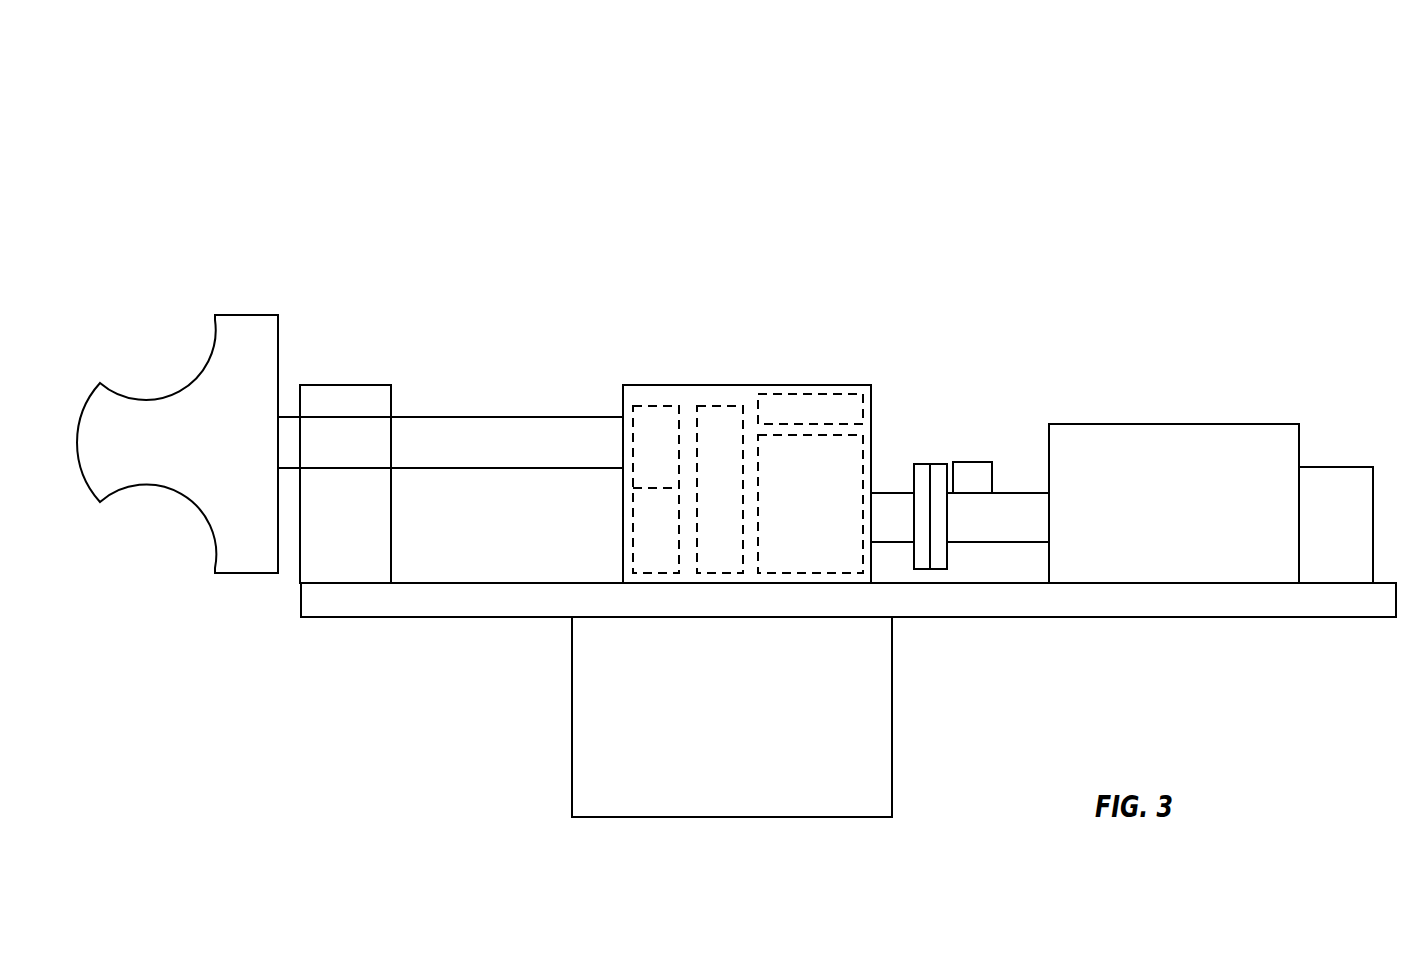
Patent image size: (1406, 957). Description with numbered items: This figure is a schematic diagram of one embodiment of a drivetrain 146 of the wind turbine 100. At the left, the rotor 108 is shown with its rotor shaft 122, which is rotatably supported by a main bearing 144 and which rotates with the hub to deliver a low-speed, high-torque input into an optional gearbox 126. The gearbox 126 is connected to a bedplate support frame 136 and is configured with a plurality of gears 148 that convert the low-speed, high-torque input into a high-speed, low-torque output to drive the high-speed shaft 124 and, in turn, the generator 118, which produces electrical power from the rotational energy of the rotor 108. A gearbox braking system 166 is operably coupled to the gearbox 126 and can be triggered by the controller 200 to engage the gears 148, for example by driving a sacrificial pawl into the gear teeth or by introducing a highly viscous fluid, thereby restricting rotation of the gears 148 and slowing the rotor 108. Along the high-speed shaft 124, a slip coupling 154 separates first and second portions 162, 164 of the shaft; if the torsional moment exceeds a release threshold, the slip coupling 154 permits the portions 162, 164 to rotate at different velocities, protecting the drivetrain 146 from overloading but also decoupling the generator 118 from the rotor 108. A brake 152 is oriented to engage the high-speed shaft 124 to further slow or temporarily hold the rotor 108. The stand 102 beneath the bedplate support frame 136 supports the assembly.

The wind turbine 100 is at (1177, 165).
The stand 102 is at (867, 742).
The rotor 108 is at (108, 432).
The generator 118 is at (1236, 448).
The rotor shaft 122 is at (490, 437).
The high-speed shaft 124 is at (998, 332).
The gearbox 126 is at (740, 392).
The bedplate support frame 136 is at (477, 607).
The main bearing 144 is at (358, 397).
The drivetrain 146 is at (1247, 278).
The gears 148 is at (717, 440).
The brake 152 is at (963, 473).
The slip coupling 154 is at (933, 443).
The first portion of the high-speed shaft 162 is at (890, 500).
The second portion of the high-speed shaft 164 is at (1032, 497).
The gearbox braking system 166 is at (827, 403).
The controller 200 is at (1337, 490).